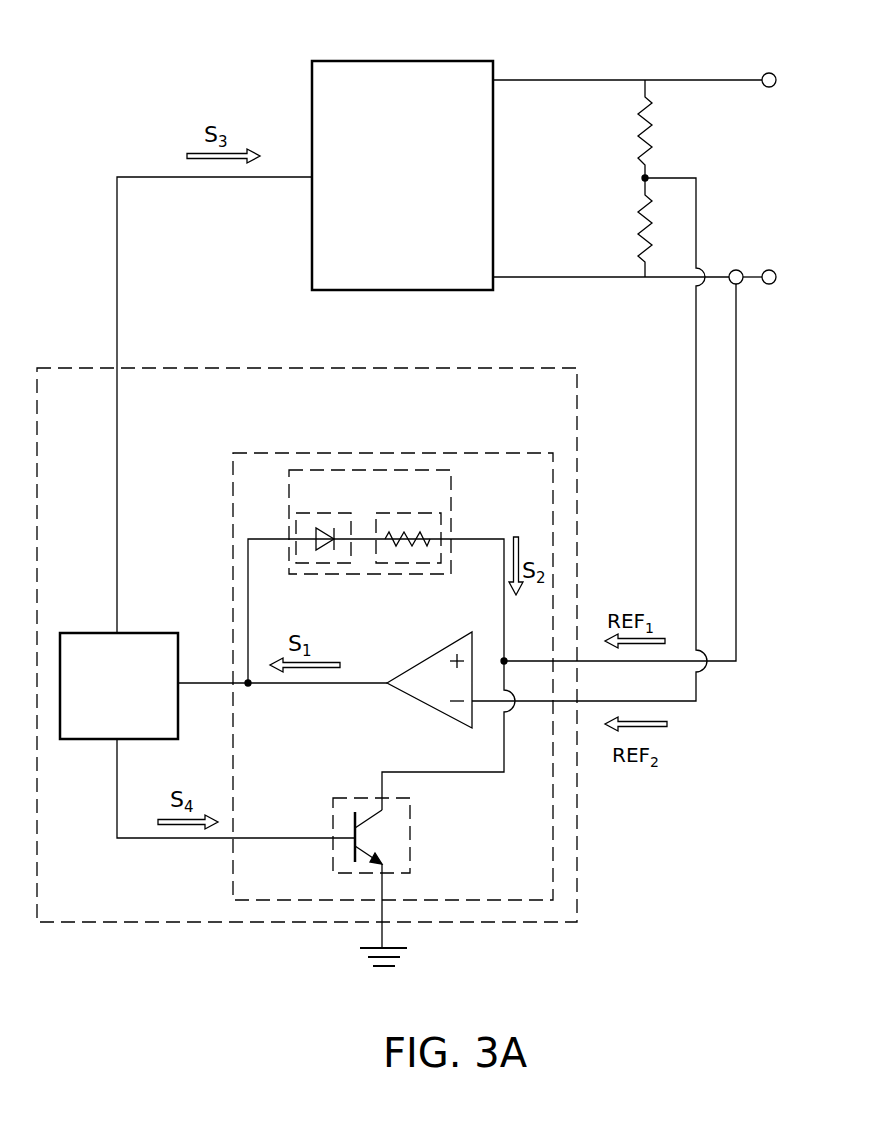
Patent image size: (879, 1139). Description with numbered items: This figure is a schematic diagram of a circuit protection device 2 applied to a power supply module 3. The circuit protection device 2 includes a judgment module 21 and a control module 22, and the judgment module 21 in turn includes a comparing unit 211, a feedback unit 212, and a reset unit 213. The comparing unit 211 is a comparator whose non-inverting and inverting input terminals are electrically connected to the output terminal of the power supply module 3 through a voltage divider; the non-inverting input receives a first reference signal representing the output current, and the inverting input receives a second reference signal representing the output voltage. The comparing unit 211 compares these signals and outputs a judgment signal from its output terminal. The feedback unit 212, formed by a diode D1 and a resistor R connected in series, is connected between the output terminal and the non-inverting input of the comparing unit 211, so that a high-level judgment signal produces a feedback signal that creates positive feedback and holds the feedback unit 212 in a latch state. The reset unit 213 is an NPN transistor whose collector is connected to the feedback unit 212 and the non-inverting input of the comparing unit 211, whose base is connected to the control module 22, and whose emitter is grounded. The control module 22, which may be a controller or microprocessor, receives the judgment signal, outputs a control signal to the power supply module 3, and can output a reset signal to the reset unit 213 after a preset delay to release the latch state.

The power supply module 3 is at (406, 60).
The circuit protection device 2 is at (548, 364).
The judgment module 21 is at (302, 450).
The control module 22 is at (152, 633).
The comparing unit 211 is at (420, 662).
The feedback unit 212 is at (390, 576).
The reset unit 213 is at (347, 797).
The diode D1 is at (306, 513).
The resistor R is at (402, 513).